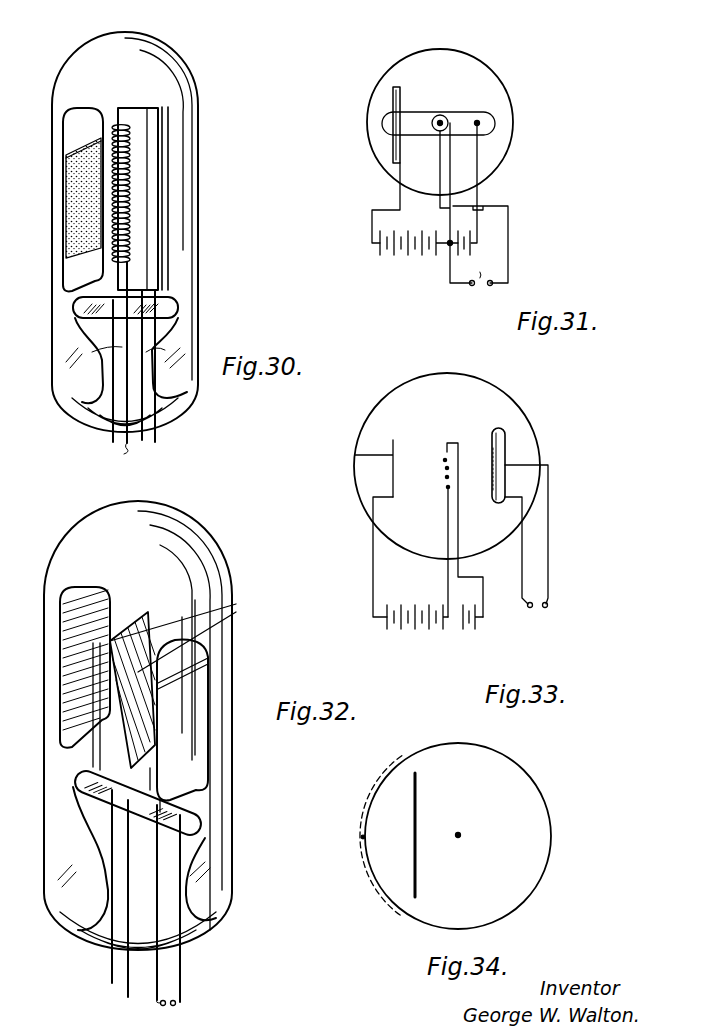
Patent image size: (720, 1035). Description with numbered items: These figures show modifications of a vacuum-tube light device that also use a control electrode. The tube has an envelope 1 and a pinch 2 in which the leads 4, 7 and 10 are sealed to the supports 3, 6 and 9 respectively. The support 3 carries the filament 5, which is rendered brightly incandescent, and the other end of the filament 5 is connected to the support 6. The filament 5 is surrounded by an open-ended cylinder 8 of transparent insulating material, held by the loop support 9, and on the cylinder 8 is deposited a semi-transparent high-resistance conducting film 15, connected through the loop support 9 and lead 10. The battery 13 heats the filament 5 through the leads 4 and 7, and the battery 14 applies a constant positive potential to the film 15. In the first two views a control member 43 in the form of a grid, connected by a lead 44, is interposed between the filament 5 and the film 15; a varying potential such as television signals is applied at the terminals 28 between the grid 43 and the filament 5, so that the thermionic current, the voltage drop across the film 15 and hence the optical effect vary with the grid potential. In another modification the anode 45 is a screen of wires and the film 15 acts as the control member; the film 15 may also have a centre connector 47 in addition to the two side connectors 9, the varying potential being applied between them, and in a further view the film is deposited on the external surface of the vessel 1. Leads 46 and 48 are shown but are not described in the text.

In FIG. 30, the envelope 1 is at (78, 300).
In FIG. 31, the envelope 1 is at (507, 132).
In FIG. 33, the envelope 1 is at (367, 417).
In FIG. 34, the envelope 1 is at (552, 832).
In FIG. 32, the envelope 1 is at (47, 785).
In FIG. 30, the pinch 2 is at (73, 330).
In FIG. 31, the pinch 2 is at (492, 135).
In FIG. 32, the pinch 2 is at (72, 818).
In FIG. 30, the support 3 is at (160, 150).
In FIG. 31, the support 3 is at (477, 120).
In FIG. 32, the support 3 is at (140, 618).
In FIG. 30, the lead 4 is at (157, 432).
In FIG. 31, the lead 4 is at (480, 198).
In FIG. 33, the lead 4 is at (483, 597).
In FIG. 32, the lead 4 is at (119, 906).
In FIG. 31, the filament 5 is at (442, 122).
In FIG. 33, the filament 5 is at (444, 459).
In FIG. 34, the filament 5 is at (460, 834).
In FIG. 32, the filament 5 is at (180, 628).
In FIG. 30, the support 6 is at (160, 292).
In FIG. 32, the support 6 is at (157, 797).
In FIG. 30, the lead 7 is at (123, 365).
In FIG. 31, the lead 7 is at (440, 207).
In FIG. 33, the lead 7 is at (447, 575).
In FIG. 32, the lead 7 is at (153, 916).
In FIG. 30, the cylinder 8 is at (63, 190).
In FIG. 33, the cylinder 8 is at (500, 430).
In FIG. 32, the cylinder 8 is at (207, 695).
In FIG. 30, the loop support 9 is at (68, 275).
In FIG. 31, the loop support 9 is at (398, 92).
In FIG. 33, the loop support 9 is at (492, 435).
In FIG. 34, the loop support 9 is at (405, 755).
In FIG. 32, the loop support 9 is at (183, 798).
In FIG. 30, the lead 10 is at (113, 433).
In FIG. 31, the lead 10 is at (372, 220).
In FIG. 33, the lead 10 is at (525, 562).
In FIG. 32, the lead 10 is at (182, 990).
In FIG. 31, the battery 13 is at (472, 250).
In FIG. 31, the battery 14 is at (415, 250).
In FIG. 33, the battery 14 is at (435, 617).
In FIG. 30, the high resistance conducting film 15 is at (75, 222).
In FIG. 31, the high resistance conducting film 15 is at (398, 102).
In FIG. 33, the high resistance conducting film 15 is at (493, 480).
In FIG. 34, the high resistance conducting film 15 is at (383, 782).
In FIG. 32, the high resistance conducting film 15 is at (207, 653).
In FIG. 31, the terminals 28 is at (479, 281).
In FIG. 33, the terminals 28 is at (539, 622).
In FIG. 32, the terminals 28 is at (168, 994).
In FIG. 30, the control member 43 is at (132, 205).
In FIG. 31, the control member 43 is at (442, 117).
In FIG. 30, the lead 44 is at (146, 379).
In FIG. 31, the lead 44 is at (508, 206).
In FIG. 33, the anode 45 is at (355, 455).
In FIG. 34, the anode 45 is at (417, 797).
In FIG. 32, the anode 45 is at (63, 603).
In FIG. 33, the lead wire 46 is at (373, 558).
In FIG. 32, the lead wire 46 is at (112, 970).
In FIG. 33, the centre connector 47 is at (493, 467).
In FIG. 34, the centre connector 47 is at (363, 837).
In FIG. 33, the lead wire 48 is at (548, 577).